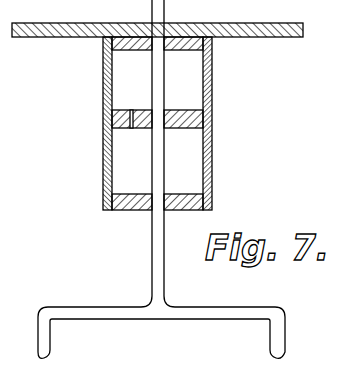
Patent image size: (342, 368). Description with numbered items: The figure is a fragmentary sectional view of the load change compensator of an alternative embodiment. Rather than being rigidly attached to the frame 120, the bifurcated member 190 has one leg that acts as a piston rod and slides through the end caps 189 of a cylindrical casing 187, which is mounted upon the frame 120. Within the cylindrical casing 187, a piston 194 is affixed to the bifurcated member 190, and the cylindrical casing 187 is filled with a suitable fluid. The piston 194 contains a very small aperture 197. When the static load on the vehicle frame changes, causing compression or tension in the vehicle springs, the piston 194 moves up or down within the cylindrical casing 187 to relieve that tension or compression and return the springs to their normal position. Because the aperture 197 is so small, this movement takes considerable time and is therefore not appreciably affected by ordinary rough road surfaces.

The frame 120 is at (70, 38).
The cylindrical casing 187 is at (212, 158).
The end caps 189 is at (184, 50).
The piston 194 is at (182, 110).
The aperture 197 is at (130, 128).
The bifurcated member 190 is at (152, 262).